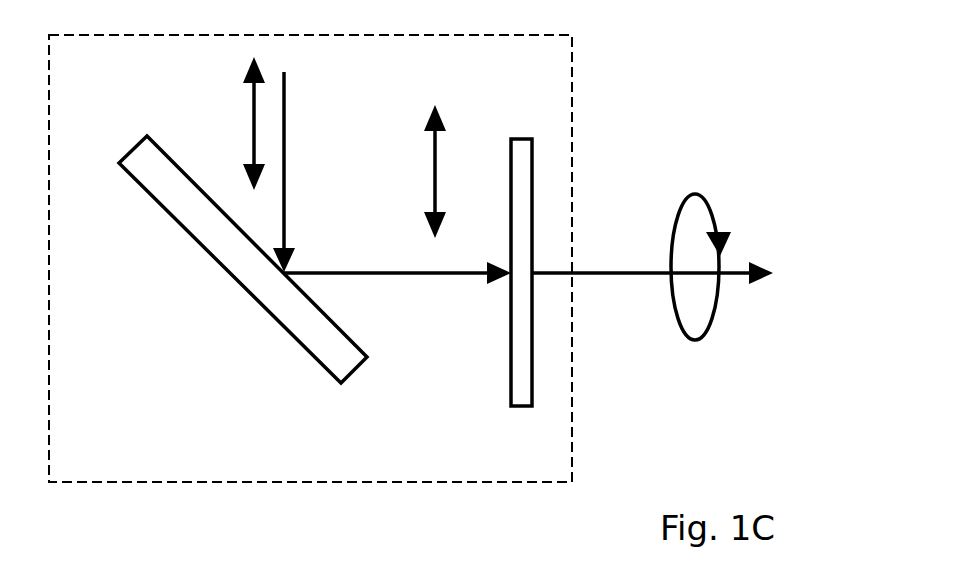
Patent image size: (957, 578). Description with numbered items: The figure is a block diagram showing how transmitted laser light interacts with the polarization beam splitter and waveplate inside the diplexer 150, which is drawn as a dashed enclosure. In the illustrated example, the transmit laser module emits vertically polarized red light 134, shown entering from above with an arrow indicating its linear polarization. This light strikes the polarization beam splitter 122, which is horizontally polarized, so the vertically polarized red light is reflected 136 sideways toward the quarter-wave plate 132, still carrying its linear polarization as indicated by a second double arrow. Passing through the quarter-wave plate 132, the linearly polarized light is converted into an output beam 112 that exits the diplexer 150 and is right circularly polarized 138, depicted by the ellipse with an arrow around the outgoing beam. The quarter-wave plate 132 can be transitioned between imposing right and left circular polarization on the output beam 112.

The diplexer 150 is at (573, 76).
The polarization beam splitter 122 is at (167, 212).
The vertically polarized red light 134 is at (286, 103).
The reflected light 136 is at (367, 275).
The quarter-wave plate 132 is at (509, 382).
The output beam 112 is at (590, 276).
The right circular polarization 138 is at (675, 213).